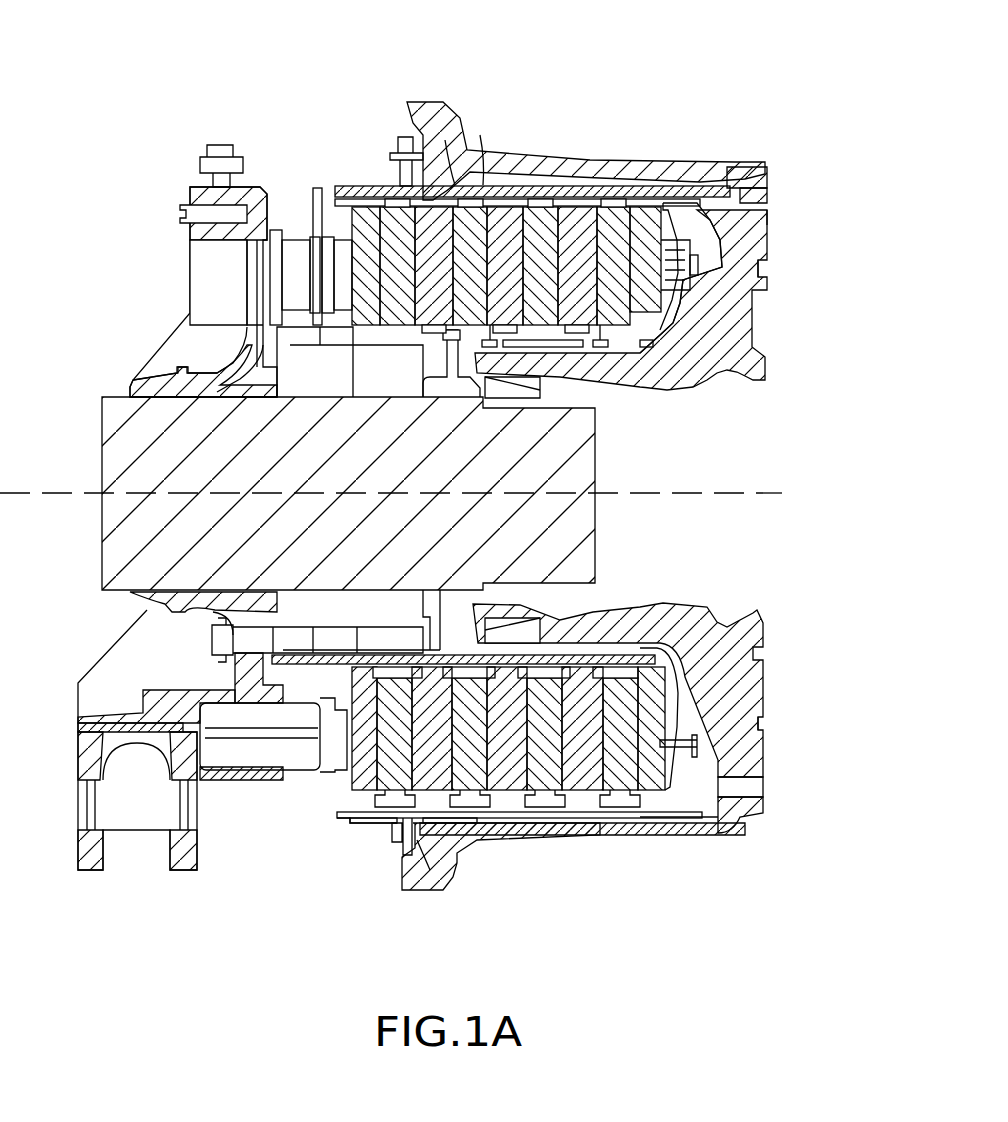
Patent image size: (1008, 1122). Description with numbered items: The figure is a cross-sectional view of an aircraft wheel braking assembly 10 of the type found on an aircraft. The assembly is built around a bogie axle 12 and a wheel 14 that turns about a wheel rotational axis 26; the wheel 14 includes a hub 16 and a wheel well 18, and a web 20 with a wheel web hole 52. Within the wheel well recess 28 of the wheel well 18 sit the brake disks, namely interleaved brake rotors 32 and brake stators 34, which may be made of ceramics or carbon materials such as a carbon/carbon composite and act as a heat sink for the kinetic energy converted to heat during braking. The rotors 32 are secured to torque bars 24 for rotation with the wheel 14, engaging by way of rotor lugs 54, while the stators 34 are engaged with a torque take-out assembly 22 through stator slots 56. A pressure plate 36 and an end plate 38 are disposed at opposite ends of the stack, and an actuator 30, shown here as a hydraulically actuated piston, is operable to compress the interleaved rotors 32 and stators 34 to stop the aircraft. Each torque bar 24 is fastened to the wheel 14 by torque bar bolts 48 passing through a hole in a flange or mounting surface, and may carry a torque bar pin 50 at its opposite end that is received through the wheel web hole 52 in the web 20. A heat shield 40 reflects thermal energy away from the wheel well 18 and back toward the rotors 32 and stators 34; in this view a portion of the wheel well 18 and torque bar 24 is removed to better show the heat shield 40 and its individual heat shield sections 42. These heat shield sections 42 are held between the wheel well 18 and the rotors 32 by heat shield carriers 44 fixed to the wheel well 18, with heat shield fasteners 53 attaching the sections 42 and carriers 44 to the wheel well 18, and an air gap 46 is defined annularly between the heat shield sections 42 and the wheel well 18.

The aircraft wheel braking assembly 10 is at (796, 98).
The bogie axle 12 is at (78, 440).
The wheel 14 is at (620, 138).
The hub 16 is at (568, 368).
The wheel well 18 is at (745, 180).
The web 20 is at (762, 698).
The torque take-out assembly 22 is at (398, 358).
The torque bar 24 is at (348, 184).
The wheel rotational axis 26 is at (668, 492).
The wheel well recess 28 is at (708, 247).
The actuator 30 is at (252, 805).
The brake rotor 32 is at (506, 503).
The brake stator 34 is at (507, 498).
The pressure plate 36 is at (366, 498).
The end plate 38 is at (664, 498).
The heat shield 40 is at (350, 850).
The heat shield section 42 is at (540, 195).
The heat shield carrier 44 is at (417, 840).
The air gap 46 is at (418, 205).
The torque bar bolt 48 is at (402, 170).
The torque bar pin 50 is at (700, 222).
The wheel web hole 52 is at (770, 218).
The heat shield fastener 53 is at (402, 867).
The rotor lug 54 is at (470, 210).
The stator slot 56 is at (440, 345).